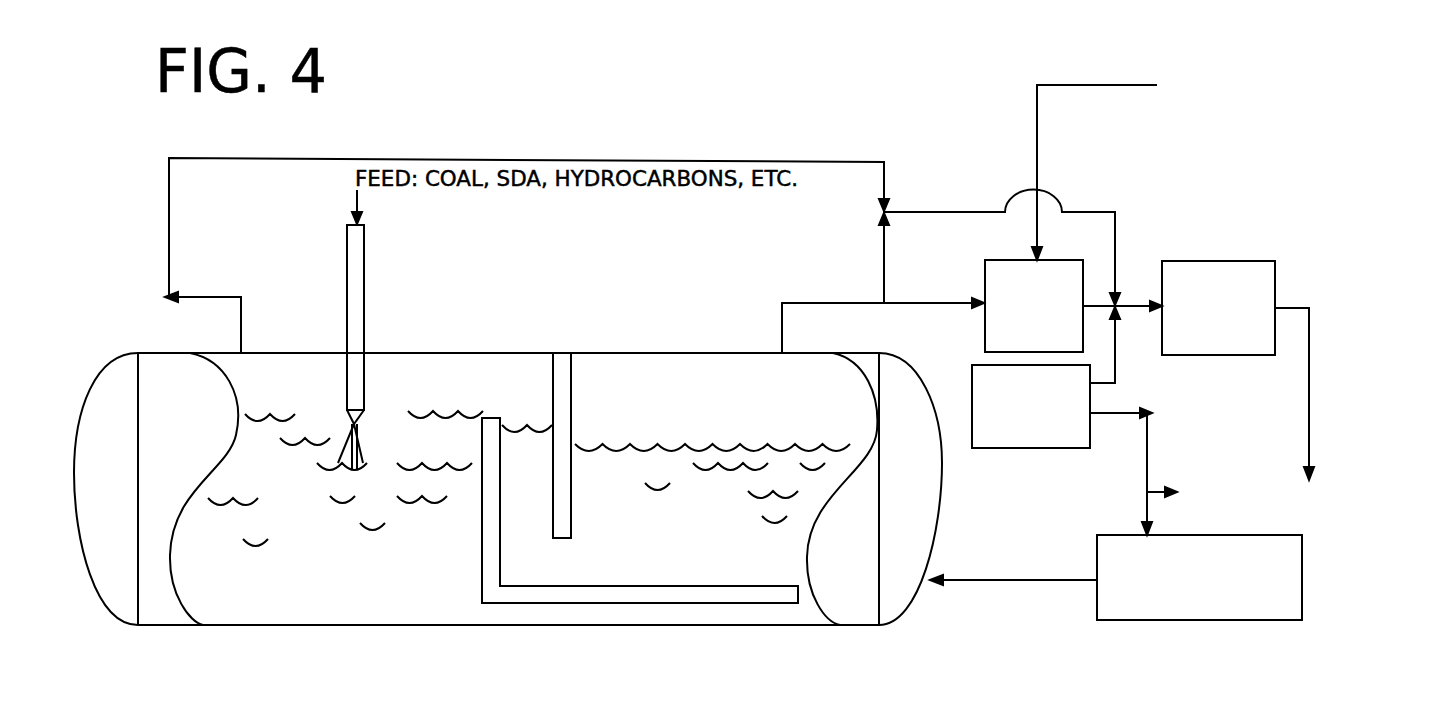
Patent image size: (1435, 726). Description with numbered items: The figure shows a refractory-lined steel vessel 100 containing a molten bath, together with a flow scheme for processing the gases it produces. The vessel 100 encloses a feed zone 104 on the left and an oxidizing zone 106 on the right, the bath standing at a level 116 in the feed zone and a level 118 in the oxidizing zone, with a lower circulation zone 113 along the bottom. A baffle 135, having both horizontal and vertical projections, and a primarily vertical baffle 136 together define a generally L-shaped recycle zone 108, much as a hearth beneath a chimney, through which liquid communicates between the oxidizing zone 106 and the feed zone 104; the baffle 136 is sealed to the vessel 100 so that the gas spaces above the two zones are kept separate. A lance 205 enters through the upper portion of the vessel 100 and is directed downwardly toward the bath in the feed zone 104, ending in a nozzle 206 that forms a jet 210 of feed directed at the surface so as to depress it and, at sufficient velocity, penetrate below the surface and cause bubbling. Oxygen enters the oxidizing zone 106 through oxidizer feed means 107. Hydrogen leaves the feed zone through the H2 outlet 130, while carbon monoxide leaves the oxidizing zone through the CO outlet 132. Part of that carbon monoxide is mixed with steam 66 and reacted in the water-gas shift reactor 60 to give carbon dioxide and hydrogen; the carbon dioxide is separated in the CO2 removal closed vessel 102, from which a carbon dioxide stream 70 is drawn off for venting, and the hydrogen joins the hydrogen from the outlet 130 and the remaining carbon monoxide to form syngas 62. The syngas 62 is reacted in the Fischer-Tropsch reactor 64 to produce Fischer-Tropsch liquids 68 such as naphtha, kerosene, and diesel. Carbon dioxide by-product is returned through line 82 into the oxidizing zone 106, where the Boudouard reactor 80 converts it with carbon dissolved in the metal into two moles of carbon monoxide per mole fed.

The refractory-lined steel vessel 100 is at (176, 609).
The feed zone 104 is at (437, 558).
The oxidizing zone 106 is at (694, 560).
The L-shaped recycle zone 108 is at (548, 561).
The lower circulation zone 113 is at (508, 610).
The molten bath level in feed zone 116 is at (445, 395).
The molten bath level in oxidizing zone 118 is at (712, 428).
The H2 outlet 130 is at (625, 270).
The CO outlet 132 is at (883, 315).
The baffle 135 is at (490, 437).
The baffle 136 is at (576, 429).
The lance 205 is at (365, 247).
The nozzle 206 is at (341, 409).
The jet 210 is at (377, 447).
The water-gas shift reactor 60 is at (1046, 289).
The syngas 62 is at (1122, 298).
The Fischer-Tropsch reactor 64 is at (1218, 308).
The steam 66 is at (1163, 161).
The Fischer-Tropsch liquids 68 is at (1349, 418).
The carbon dioxide vent line 70 is at (1163, 471).
The Boudouard reactor 80 is at (1217, 613).
The line 82 is at (1013, 571).
The CO2 removal closed vessel 102 is at (1048, 392).
The oxidizer feed means 107 is at (910, 620).